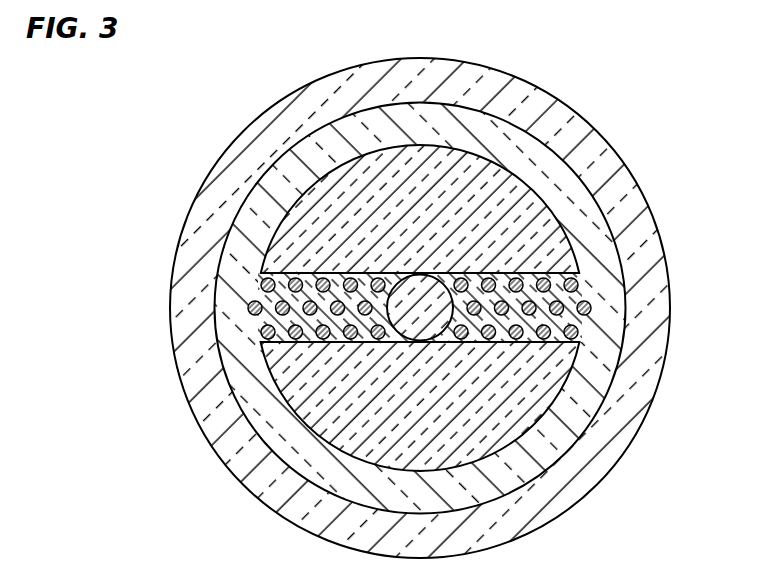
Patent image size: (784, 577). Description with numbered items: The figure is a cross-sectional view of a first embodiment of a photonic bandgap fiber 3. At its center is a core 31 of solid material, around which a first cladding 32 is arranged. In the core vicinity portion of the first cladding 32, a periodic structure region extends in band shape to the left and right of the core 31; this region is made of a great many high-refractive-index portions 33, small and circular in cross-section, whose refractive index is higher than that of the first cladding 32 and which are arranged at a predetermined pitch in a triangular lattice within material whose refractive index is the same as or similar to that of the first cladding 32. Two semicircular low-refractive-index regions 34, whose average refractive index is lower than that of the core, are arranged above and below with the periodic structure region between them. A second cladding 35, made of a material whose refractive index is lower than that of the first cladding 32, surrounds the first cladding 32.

The photonic bandgap fiber 3 is at (425, 291).
The core 31 is at (393, 303).
The first cladding 32 is at (575, 197).
The high-refractive-index portions 33 is at (590, 309).
The low-refractive-index region 34 is at (530, 393).
The second cladding 35 is at (248, 165).